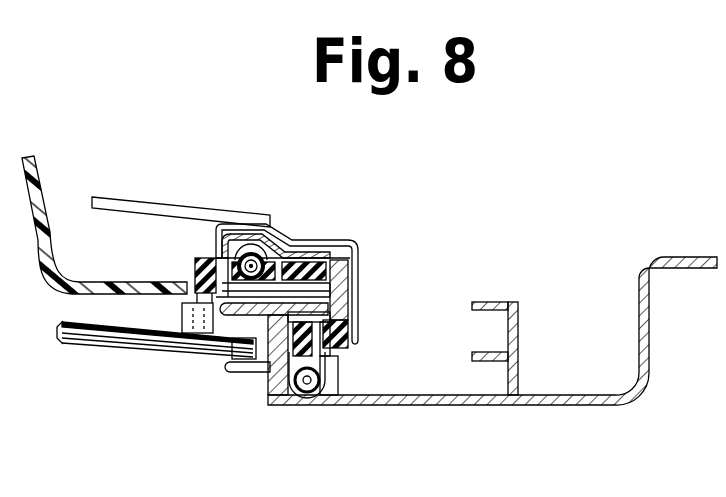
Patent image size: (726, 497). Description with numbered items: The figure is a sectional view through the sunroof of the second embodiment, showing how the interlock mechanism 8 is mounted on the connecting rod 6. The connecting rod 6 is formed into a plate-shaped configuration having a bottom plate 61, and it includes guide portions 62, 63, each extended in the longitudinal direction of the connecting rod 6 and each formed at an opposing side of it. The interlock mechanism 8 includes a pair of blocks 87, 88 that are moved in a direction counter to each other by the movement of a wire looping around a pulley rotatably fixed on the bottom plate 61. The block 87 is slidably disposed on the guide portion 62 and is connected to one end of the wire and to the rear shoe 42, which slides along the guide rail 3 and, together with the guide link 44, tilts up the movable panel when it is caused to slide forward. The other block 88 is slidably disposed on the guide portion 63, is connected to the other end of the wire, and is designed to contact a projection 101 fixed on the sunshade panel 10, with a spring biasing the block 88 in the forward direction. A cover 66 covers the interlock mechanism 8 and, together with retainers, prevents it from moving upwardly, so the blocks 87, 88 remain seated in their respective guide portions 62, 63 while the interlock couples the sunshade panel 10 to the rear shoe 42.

The guide rail 3 is at (509, 398).
The connecting rod 6 is at (358, 268).
The interlock mechanism 8 is at (352, 352).
The sunshade panel 10 is at (110, 332).
The rear shoe 42 is at (292, 372).
The guide link 44 is at (106, 197).
The bottom plate 61 is at (252, 293).
The guide portion 62 is at (212, 260).
The guide portion 63 is at (328, 258).
The cover 66 is at (268, 234).
The block 87 is at (355, 312).
The block 88 is at (195, 258).
The projection 101 is at (183, 318).